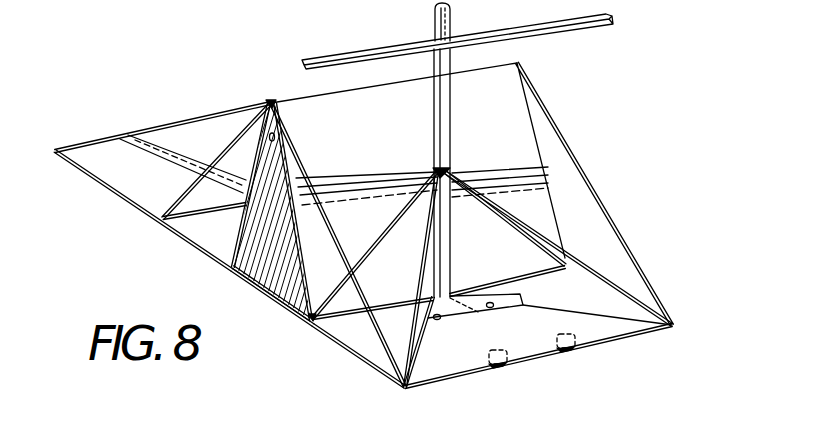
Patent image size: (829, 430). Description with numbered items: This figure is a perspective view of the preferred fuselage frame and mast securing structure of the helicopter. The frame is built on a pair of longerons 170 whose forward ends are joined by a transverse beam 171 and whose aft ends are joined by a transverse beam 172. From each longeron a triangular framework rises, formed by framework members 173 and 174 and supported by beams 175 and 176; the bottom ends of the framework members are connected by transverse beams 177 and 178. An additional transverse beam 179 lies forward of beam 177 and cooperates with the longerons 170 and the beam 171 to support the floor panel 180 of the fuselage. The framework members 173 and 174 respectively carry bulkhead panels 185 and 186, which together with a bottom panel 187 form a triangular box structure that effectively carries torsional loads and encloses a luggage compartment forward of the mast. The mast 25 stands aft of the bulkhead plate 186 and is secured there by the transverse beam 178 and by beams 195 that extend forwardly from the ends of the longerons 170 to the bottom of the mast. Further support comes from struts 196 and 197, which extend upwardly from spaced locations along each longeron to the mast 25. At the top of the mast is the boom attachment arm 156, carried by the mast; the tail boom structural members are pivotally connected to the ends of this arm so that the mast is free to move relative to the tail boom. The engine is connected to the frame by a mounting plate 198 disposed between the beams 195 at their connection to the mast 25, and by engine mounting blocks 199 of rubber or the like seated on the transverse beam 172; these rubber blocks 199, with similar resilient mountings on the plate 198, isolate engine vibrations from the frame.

The mast 25 is at (434, 17).
The boom attachment arm 156 is at (541, 25).
The longerons 170 is at (97, 180).
The transverse beam 171 is at (104, 140).
The transverse beam 172 is at (445, 380).
The framework member 173 is at (213, 260).
The framework member 174 is at (300, 318).
The beam 175 is at (148, 217).
The beam 176 is at (592, 163).
The transverse beam 177 is at (247, 283).
The transverse beam 178 is at (340, 333).
The transverse beam 179 is at (173, 237).
The floor panel 180 is at (182, 140).
The bulkhead panel 185 is at (267, 112).
The bulkhead panel 186 is at (375, 105).
The bottom panel 187 is at (267, 291).
The beams 195 is at (423, 347).
The strut 196 is at (370, 252).
The strut 197 is at (418, 293).
The mounting plate 198 is at (492, 306).
The engine mounting blocks 199 is at (578, 360).